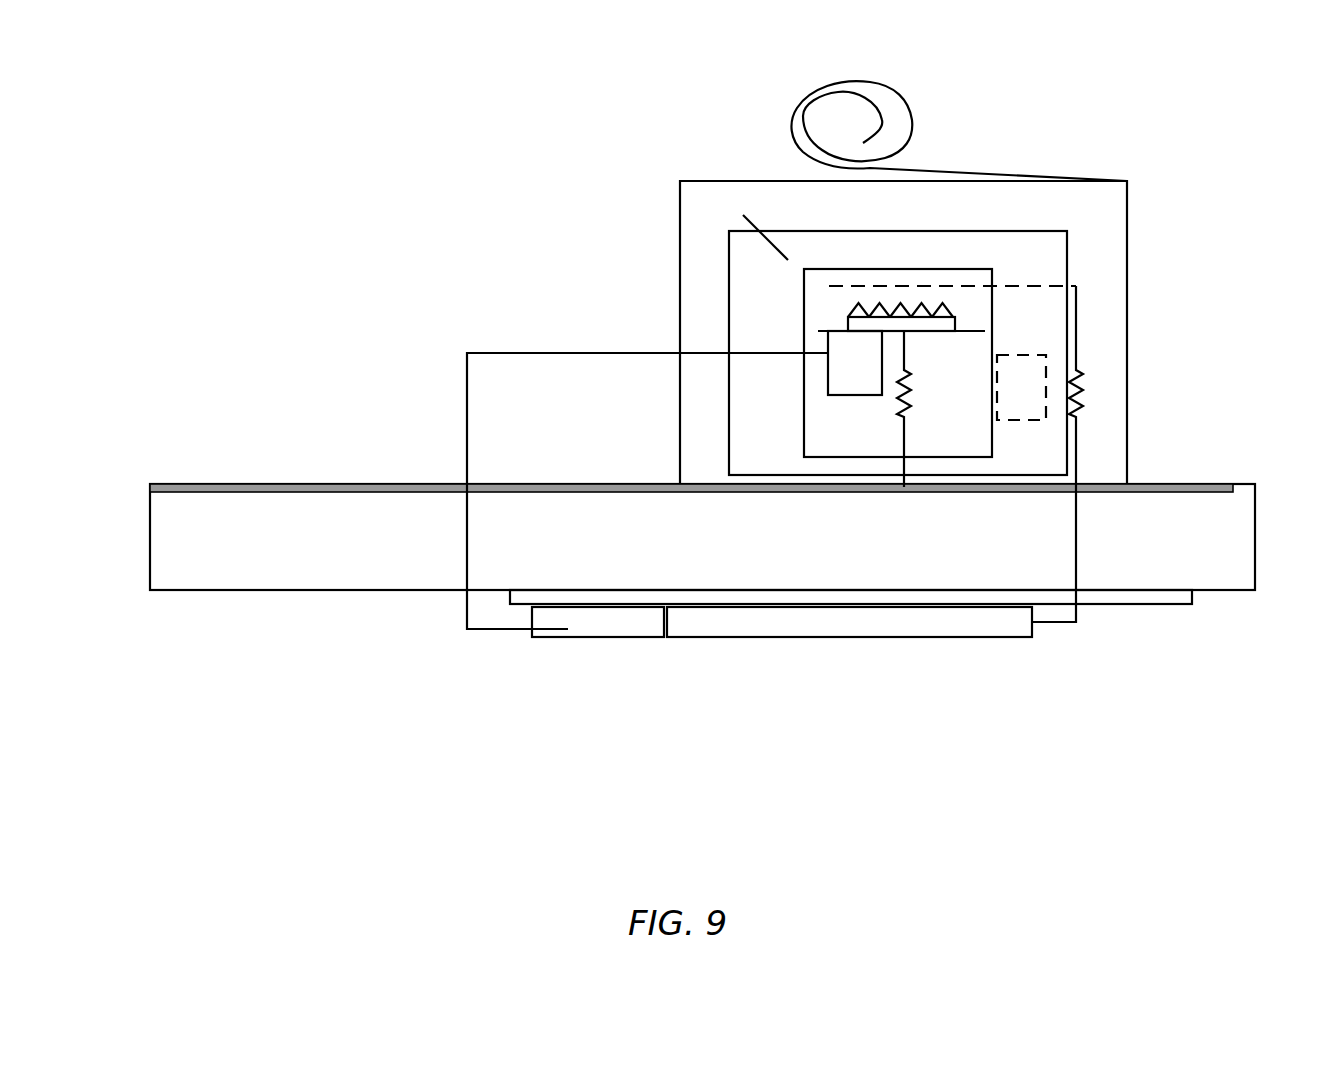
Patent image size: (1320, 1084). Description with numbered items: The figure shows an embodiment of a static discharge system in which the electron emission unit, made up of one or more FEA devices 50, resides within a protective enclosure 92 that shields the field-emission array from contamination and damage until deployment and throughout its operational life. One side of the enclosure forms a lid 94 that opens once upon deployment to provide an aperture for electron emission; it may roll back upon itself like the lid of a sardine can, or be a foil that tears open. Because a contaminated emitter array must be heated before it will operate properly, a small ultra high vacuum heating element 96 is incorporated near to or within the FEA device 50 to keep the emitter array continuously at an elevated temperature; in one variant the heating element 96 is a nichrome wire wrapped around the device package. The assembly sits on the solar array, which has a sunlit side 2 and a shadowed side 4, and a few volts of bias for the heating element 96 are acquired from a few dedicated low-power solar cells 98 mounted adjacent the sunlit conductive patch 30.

The sunlit side of solar array 2 is at (335, 600).
The shadowed side of solar array 4 is at (190, 474).
The conductive patch 30 is at (871, 637).
The FEA device 50 is at (861, 435).
The protective enclosure 92 is at (680, 226).
The lid 94 is at (915, 123).
The heating element 96 is at (756, 480).
The dedicated low-power solar cells 98 is at (595, 637).